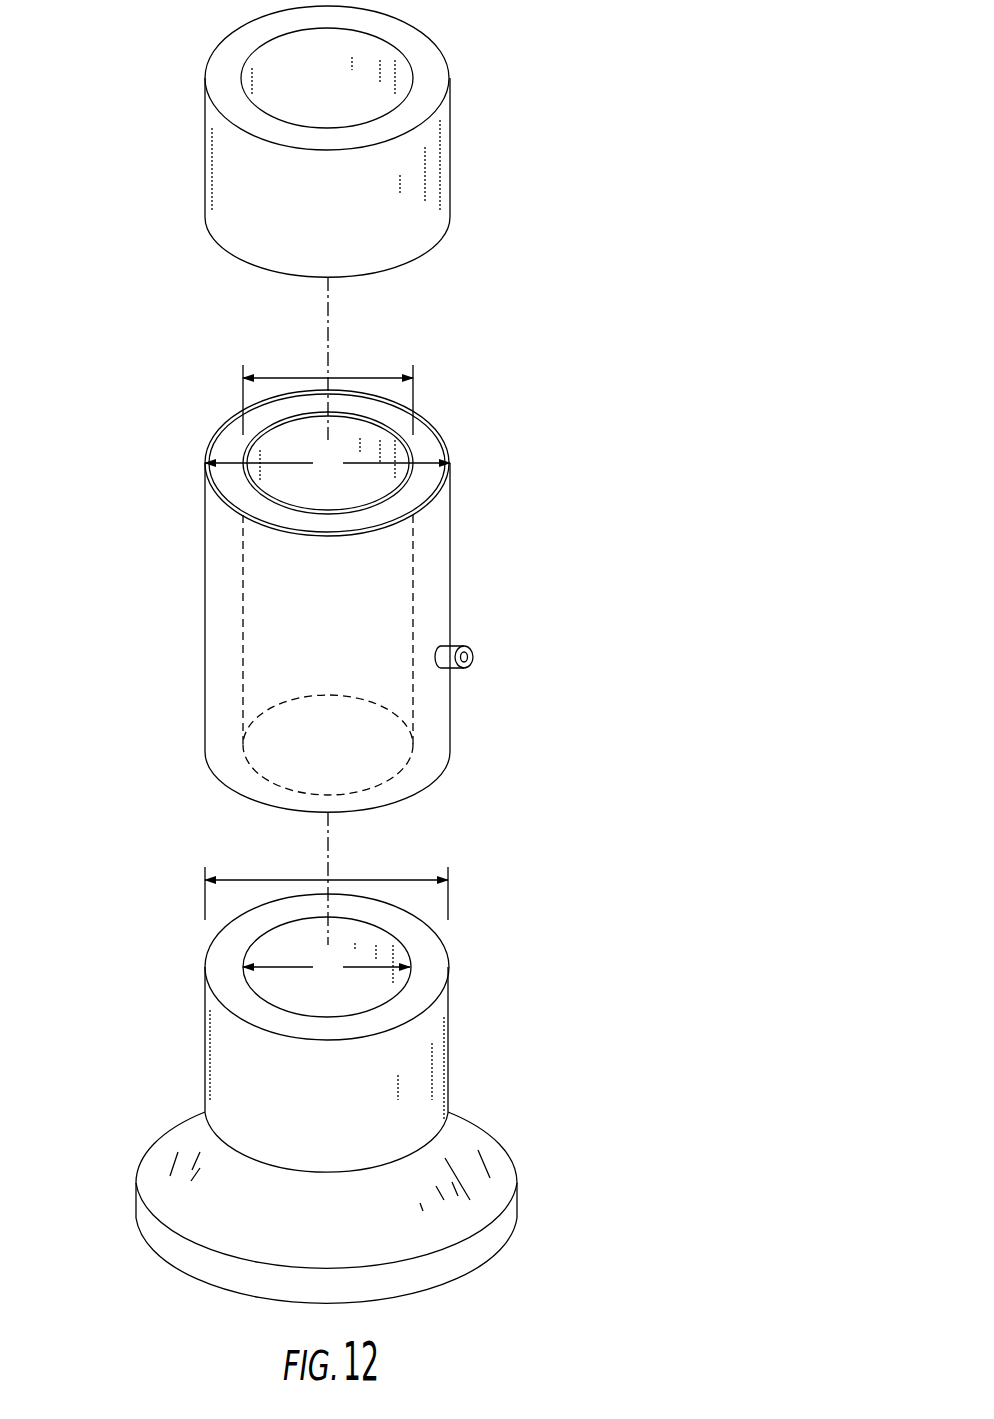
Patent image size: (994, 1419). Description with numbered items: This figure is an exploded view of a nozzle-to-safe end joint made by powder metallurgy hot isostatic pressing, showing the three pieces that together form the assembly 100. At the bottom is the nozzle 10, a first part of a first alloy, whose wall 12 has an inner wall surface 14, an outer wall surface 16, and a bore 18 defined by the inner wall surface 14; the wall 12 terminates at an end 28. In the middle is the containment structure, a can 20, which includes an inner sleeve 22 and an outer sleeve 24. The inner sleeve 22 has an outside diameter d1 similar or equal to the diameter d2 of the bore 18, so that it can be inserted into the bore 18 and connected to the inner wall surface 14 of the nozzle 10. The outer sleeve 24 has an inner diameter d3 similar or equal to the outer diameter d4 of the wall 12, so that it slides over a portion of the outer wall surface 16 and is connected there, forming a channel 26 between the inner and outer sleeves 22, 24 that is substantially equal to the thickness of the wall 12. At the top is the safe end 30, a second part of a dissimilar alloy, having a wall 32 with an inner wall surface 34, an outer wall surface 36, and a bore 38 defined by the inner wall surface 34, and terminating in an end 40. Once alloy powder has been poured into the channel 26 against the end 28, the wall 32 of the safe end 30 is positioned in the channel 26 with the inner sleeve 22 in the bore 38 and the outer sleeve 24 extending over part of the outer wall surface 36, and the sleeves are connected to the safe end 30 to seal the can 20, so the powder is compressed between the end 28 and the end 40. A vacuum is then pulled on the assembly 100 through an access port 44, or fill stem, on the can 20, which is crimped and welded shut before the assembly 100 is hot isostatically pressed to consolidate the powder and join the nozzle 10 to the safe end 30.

The assembly 100 is at (667, 137).
The nozzle 10 is at (533, 1030).
The wall 12 is at (427, 975).
The inner wall surface 14 is at (387, 1004).
The outer wall surface 16 is at (215, 1048).
The bore 18 is at (273, 955).
The can 20 is at (495, 577).
The inner sleeve 22 is at (410, 450).
The outer sleeve 24 is at (450, 480).
The channel 26 is at (223, 448).
The end 28 is at (425, 948).
The safe end 30 is at (473, 143).
The wall 32 is at (427, 200).
The inner wall surface 34 is at (283, 118).
The outer wall surface 36 is at (393, 230).
The bore 38 is at (390, 90).
The end 40 is at (270, 268).
The access port 44 is at (475, 660).
The outside diameter d1 is at (328, 388).
The diameter d2 is at (326, 971).
The inner diameter d3 is at (327, 467).
The outer diameter d4 is at (326, 883).